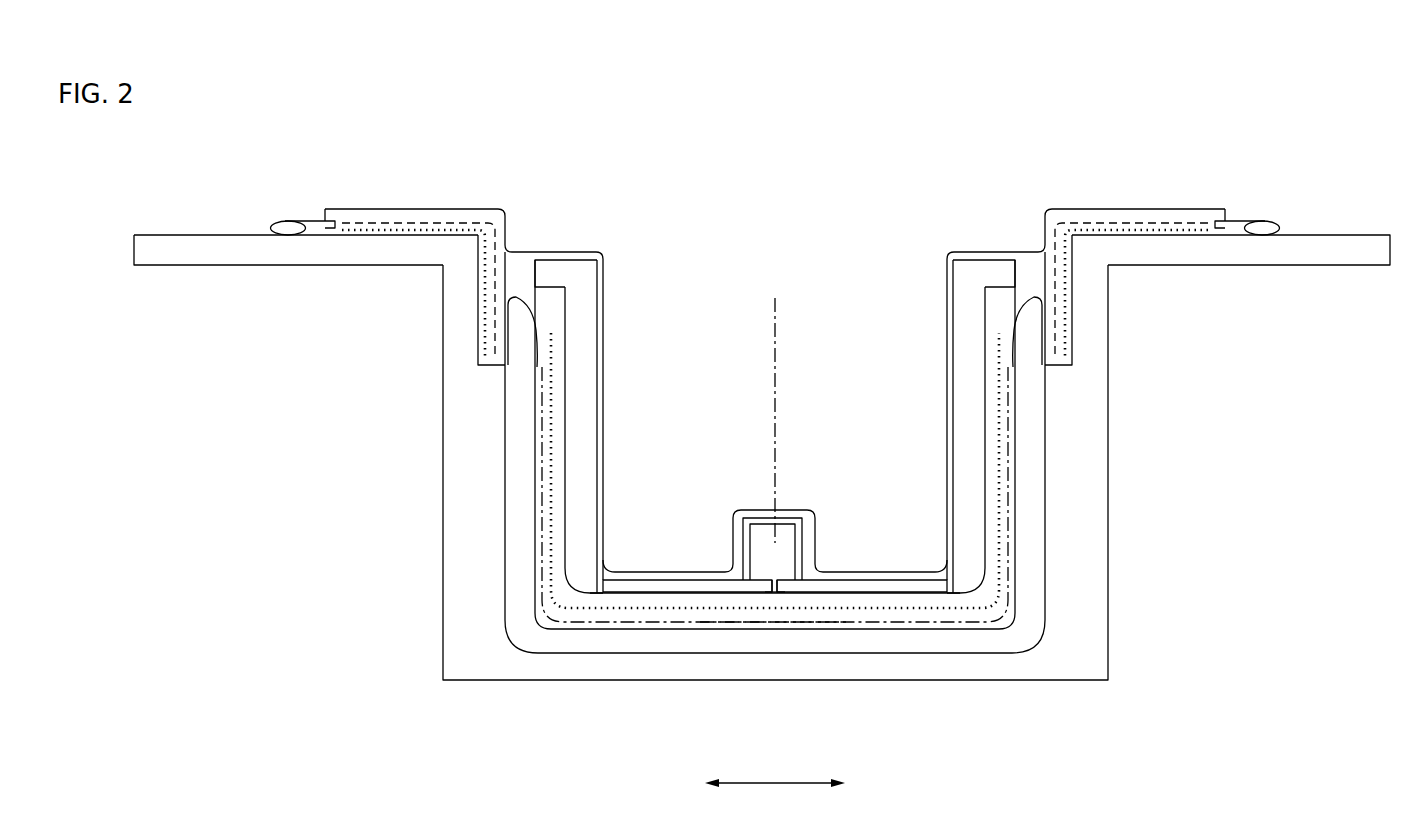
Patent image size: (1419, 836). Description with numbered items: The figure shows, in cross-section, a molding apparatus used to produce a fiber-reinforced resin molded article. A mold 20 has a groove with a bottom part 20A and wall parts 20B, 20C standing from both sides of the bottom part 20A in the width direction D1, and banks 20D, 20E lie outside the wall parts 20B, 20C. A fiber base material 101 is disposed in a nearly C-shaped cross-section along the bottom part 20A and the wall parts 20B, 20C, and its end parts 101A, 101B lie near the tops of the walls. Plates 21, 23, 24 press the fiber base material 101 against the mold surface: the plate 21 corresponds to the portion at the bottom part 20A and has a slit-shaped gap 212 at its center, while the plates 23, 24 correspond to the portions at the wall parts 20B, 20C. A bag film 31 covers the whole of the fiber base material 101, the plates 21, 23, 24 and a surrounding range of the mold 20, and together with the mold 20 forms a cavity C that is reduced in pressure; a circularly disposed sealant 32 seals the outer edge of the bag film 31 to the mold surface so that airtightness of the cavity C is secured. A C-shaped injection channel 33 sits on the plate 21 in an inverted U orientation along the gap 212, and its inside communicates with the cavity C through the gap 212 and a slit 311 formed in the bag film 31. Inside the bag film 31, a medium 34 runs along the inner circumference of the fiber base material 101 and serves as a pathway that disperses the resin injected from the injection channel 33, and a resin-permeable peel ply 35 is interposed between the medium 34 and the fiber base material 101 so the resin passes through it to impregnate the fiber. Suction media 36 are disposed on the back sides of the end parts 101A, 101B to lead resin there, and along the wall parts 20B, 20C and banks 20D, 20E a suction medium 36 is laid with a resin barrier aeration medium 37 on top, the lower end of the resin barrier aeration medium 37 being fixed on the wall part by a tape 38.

The mold 20 is at (1355, 221).
The bottom part 20A is at (670, 655).
The wall part 20B is at (508, 492).
The wall part 20C is at (1040, 492).
The bank 20D is at (207, 234).
The bank 20E is at (1307, 235).
The plate 21 is at (627, 580).
The gap 212 is at (773, 580).
The plate 23 is at (601, 352).
The plate 24 is at (951, 422).
The bag film 31 is at (371, 208).
The slit 311 is at (772, 598).
The sealant 32 is at (290, 233).
The injection channel 33 is at (782, 523).
The medium 34 is at (851, 600).
The peel ply 35 is at (717, 621).
The suction medium 36 is at (448, 233).
The resin barrier aeration medium 37 is at (453, 209).
The tape 38 is at (330, 229).
The fiber base material 101 is at (1033, 555).
The end part 101A is at (518, 292).
The end part 101B is at (1030, 296).
The cavity C is at (912, 606).
The width direction D1 is at (775, 803).